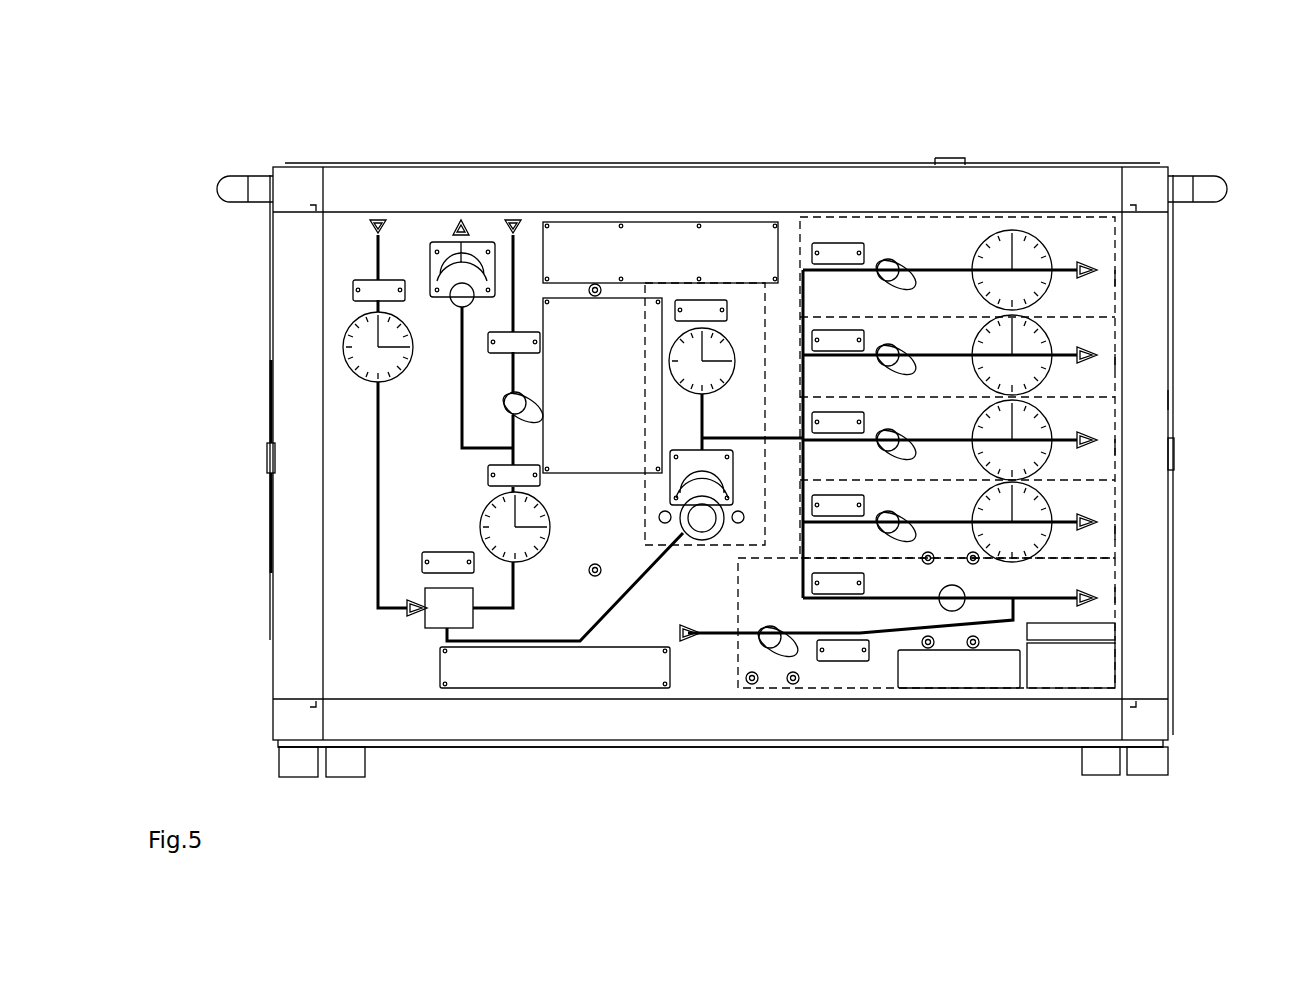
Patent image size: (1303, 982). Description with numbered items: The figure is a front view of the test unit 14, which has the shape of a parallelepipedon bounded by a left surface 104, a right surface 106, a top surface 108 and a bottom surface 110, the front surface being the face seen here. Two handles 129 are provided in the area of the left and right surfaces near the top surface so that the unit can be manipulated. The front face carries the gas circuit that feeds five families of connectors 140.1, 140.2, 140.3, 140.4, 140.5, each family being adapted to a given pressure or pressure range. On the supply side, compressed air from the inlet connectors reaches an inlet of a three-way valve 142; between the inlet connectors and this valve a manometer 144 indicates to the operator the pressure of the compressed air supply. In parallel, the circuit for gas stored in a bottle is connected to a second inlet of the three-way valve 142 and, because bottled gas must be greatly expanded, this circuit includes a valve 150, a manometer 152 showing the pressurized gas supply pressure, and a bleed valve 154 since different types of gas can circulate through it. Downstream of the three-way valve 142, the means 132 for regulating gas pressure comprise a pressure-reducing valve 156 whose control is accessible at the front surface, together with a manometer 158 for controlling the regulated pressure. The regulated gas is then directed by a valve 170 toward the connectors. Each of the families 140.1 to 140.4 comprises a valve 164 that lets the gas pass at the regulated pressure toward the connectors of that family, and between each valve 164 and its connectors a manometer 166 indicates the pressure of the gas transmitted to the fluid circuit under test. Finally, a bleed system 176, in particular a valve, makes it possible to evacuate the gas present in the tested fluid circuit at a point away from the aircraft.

The test unit 14 is at (405, 148).
The left surface 104 is at (262, 460).
The right surface 106 is at (1173, 400).
The top surface 108 is at (745, 160).
The bottom surface 110 is at (755, 752).
The handles 129 is at (232, 188).
The means for regulating gas pressure 132 is at (746, 275).
The family of connectors 140.1 is at (1125, 278).
The family of connectors 140.2 is at (1125, 362).
The family of connectors 140.3 is at (1125, 447).
The family of connectors 140.4 is at (1125, 532).
The family of connectors 140.5 is at (1125, 595).
The three-way valve 142 is at (418, 632).
The manometer 144 is at (368, 338).
The valve 150 is at (528, 398).
The manometer 152 is at (525, 545).
The bleed valve 154 is at (464, 292).
The pressure-reducing valve 156 is at (707, 530).
The manometer 158 is at (692, 345).
The valve 164 is at (915, 370).
The manometer 166 is at (1027, 508).
The valve 170 is at (948, 600).
The bleed system 176 is at (800, 650).